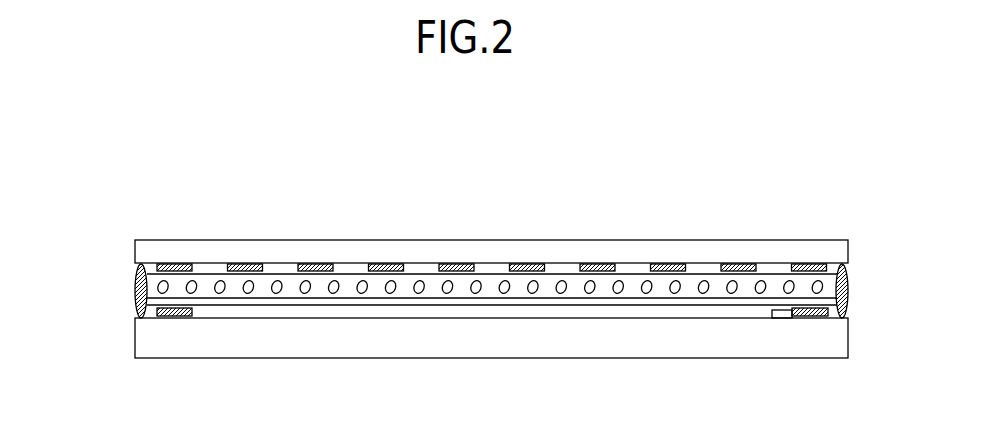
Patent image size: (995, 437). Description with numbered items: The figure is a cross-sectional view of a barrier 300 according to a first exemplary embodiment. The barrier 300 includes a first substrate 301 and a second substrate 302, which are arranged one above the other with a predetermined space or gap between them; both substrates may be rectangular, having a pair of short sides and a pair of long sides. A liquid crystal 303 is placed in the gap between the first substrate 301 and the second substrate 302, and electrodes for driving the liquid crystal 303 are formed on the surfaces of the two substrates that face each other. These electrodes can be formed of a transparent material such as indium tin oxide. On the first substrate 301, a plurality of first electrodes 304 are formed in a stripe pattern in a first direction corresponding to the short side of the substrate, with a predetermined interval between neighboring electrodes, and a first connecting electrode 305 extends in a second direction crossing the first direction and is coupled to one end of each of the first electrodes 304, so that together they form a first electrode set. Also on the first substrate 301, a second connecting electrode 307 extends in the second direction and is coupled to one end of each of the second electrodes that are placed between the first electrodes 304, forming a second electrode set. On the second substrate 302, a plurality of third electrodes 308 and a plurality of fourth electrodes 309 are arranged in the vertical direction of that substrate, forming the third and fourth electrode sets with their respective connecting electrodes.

The barrier 300 is at (667, 166).
The first substrate 301 is at (500, 340).
The second substrate 302 is at (538, 243).
The liquid crystal 303 is at (182, 287).
The first electrodes 304 is at (215, 317).
The first connecting electrode 305 is at (172, 317).
The second connecting electrode 307 is at (810, 317).
The third electrodes 308 is at (176, 263).
The fourth electrodes 309 is at (246, 263).